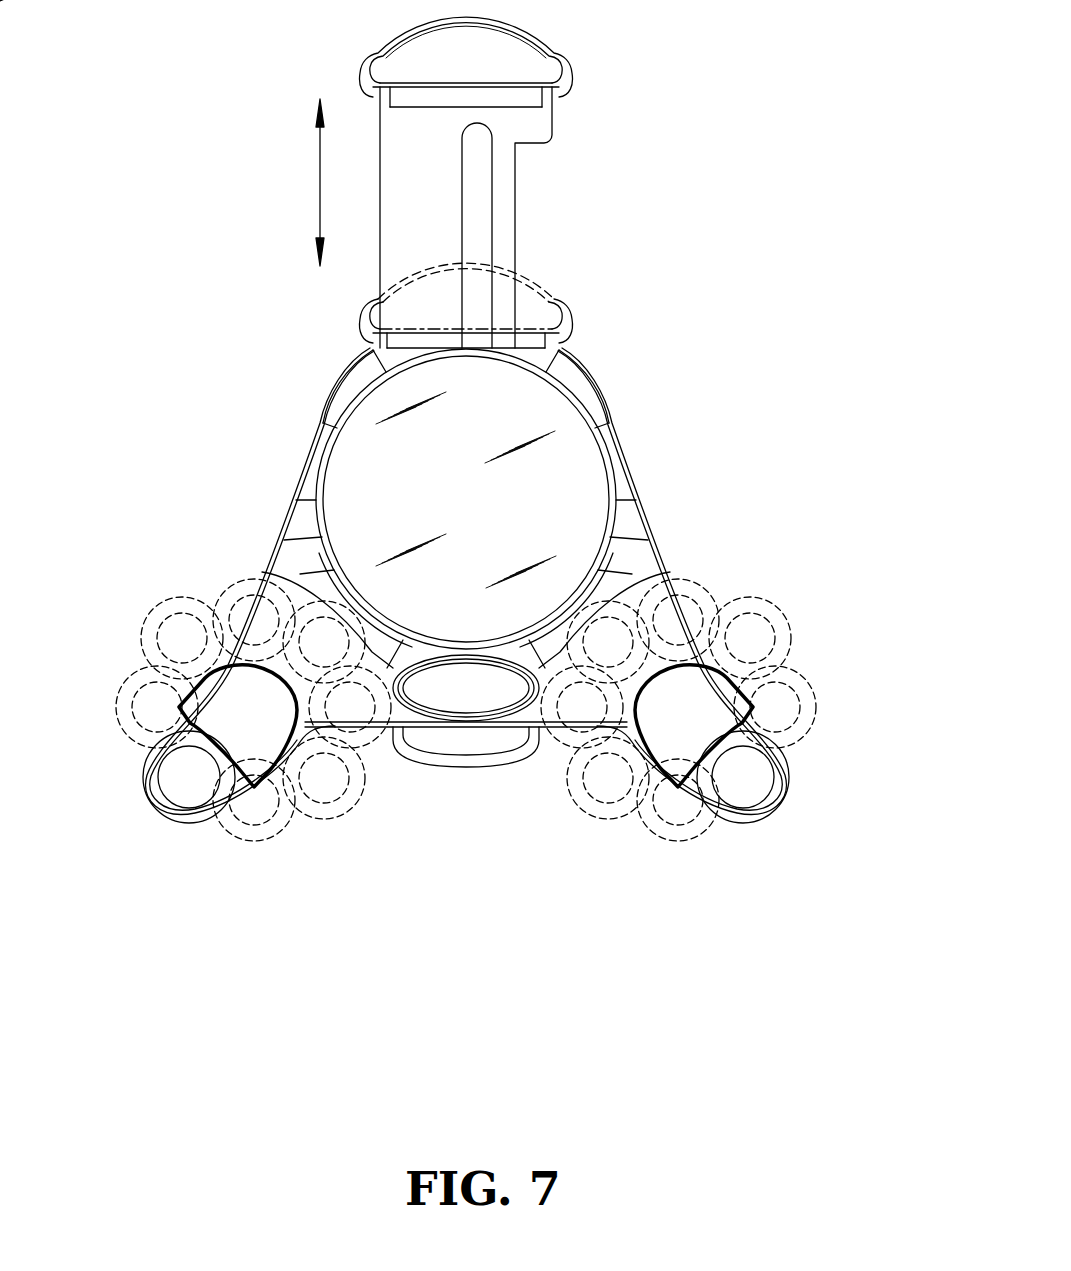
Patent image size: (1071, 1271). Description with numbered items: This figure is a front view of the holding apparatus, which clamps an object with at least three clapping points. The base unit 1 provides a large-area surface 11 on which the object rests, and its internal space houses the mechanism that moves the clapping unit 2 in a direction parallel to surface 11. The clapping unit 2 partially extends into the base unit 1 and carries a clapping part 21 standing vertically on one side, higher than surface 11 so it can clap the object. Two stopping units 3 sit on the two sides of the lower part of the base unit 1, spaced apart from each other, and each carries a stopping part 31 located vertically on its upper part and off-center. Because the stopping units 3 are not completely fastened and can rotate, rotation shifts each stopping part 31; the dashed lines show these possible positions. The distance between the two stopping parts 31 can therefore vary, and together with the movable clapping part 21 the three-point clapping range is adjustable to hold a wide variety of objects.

The base unit 1 is at (590, 397).
The surface 11 is at (585, 475).
The clapping unit 2 is at (535, 125).
The clapping part 21 is at (538, 63).
The stopping unit 3 is at (178, 684).
The stopping part 31 is at (180, 787).